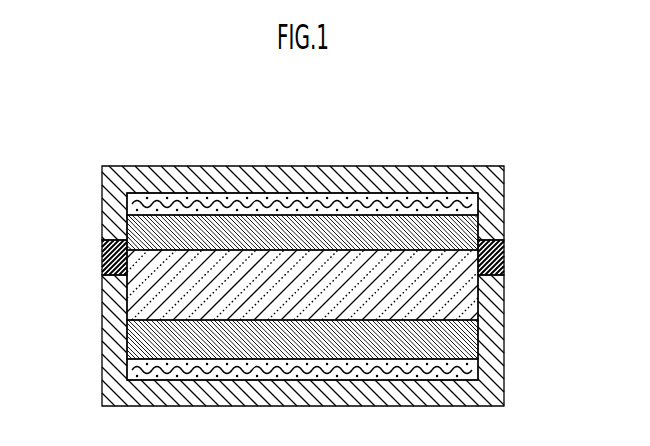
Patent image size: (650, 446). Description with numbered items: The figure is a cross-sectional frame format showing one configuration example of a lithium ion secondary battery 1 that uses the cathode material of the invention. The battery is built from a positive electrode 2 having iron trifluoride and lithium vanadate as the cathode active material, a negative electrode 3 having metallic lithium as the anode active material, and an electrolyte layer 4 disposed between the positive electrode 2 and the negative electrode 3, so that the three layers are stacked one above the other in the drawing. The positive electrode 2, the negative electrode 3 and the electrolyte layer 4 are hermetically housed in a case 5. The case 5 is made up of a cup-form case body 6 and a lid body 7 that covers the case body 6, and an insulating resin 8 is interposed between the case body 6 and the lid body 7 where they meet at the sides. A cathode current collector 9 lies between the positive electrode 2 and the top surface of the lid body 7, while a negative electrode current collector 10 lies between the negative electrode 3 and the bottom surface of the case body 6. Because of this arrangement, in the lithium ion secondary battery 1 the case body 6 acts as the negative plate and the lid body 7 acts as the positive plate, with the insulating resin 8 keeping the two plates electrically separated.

The lithium ion secondary battery 1 is at (546, 131).
The positive electrode 2 is at (478, 219).
The negative electrode 3 is at (480, 338).
The electrolyte layer 4 is at (470, 297).
The case 5 is at (60, 212).
The case body 6 is at (103, 297).
The lid body 7 is at (103, 223).
The insulating resin 8 is at (103, 260).
The cathode current collector 9 is at (470, 196).
The negative electrode current collector 10 is at (470, 365).